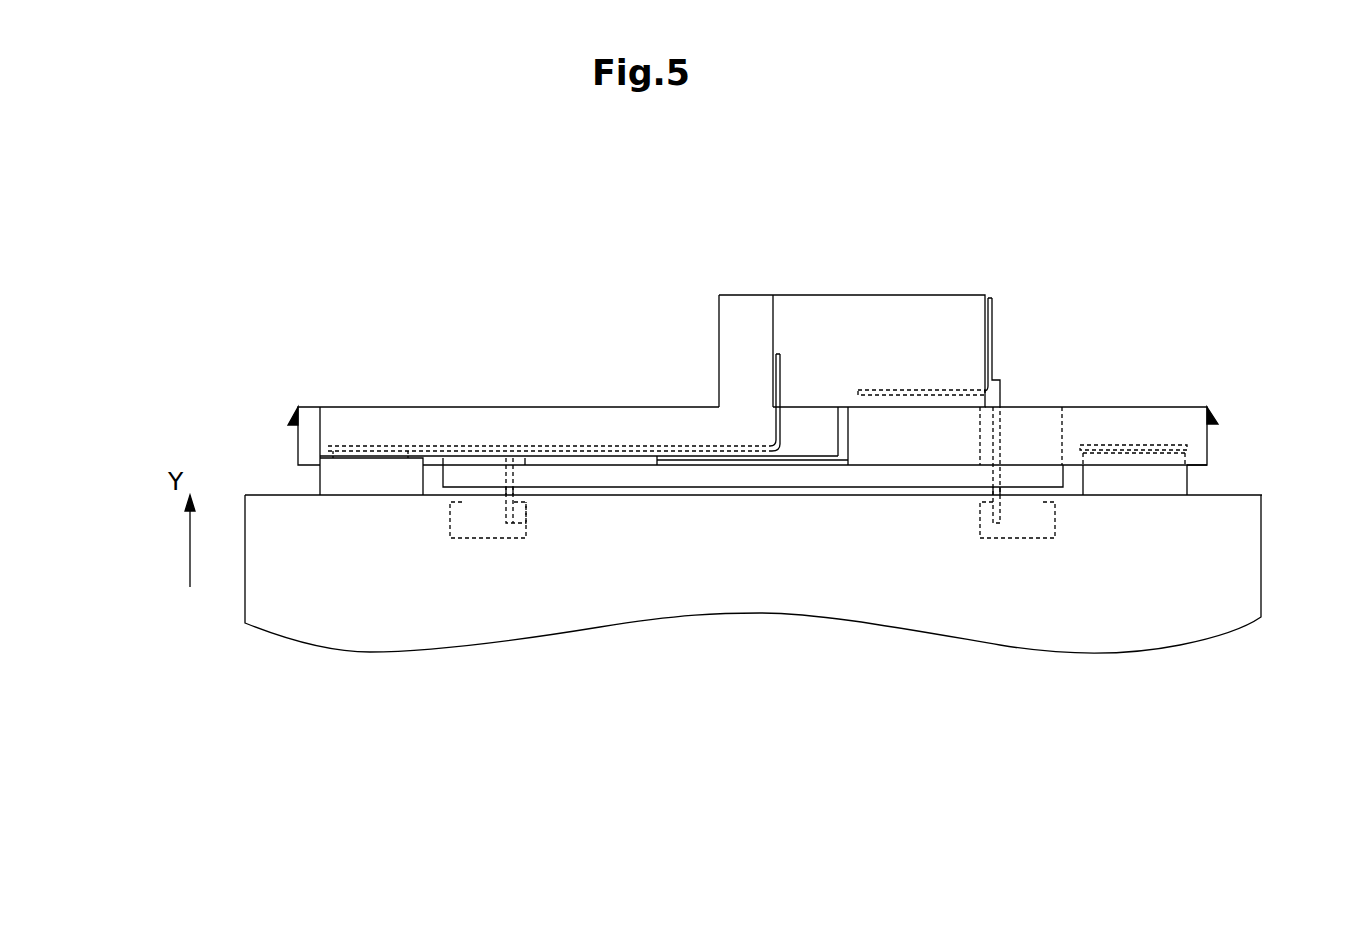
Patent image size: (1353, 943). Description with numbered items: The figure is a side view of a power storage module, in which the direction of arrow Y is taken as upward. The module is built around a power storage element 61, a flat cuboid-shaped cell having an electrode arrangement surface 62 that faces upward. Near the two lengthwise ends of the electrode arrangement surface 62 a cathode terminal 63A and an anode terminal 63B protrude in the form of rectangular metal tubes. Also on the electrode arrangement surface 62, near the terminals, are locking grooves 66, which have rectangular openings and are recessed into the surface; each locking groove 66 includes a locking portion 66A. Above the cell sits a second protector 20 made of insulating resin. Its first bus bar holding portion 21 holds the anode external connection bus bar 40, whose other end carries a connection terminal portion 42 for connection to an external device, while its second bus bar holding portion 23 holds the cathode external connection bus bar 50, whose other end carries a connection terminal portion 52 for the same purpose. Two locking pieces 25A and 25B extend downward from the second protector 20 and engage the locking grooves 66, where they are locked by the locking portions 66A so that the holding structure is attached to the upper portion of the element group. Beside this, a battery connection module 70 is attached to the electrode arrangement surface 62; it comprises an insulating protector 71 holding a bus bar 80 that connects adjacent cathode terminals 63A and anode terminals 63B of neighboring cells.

The second protector 20 is at (740, 293).
The first bus bar holding portion 21 is at (907, 293).
The second bus bar holding portion 23 is at (410, 407).
The locking piece 25A is at (517, 480).
The locking piece 25B is at (1003, 427).
The anode external connection bus bar 40 is at (921, 390).
The connection terminal portion 42 is at (993, 336).
The cathode external connection bus bar 50 is at (617, 446).
The connection terminal portion 52 is at (780, 390).
The power storage element 61 is at (1243, 565).
The electrode arrangement surface 62 is at (1240, 492).
The cathode terminal 63A is at (327, 483).
The anode terminal 63B is at (1178, 482).
The locking groove 66 is at (527, 523).
The locking portion 66A is at (520, 502).
The battery connection module 70 is at (1207, 400).
The insulating protector 71 is at (1178, 407).
The bus bar 80 is at (1118, 445).